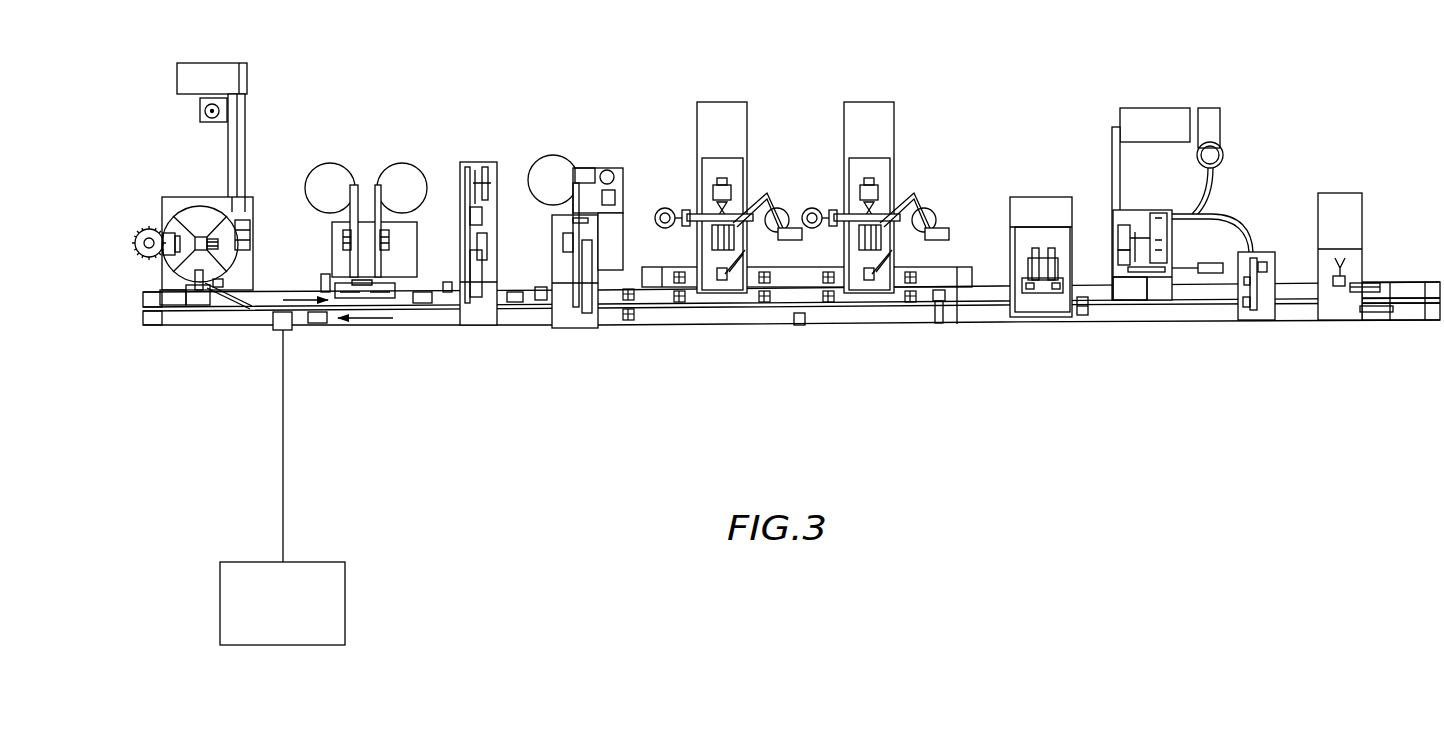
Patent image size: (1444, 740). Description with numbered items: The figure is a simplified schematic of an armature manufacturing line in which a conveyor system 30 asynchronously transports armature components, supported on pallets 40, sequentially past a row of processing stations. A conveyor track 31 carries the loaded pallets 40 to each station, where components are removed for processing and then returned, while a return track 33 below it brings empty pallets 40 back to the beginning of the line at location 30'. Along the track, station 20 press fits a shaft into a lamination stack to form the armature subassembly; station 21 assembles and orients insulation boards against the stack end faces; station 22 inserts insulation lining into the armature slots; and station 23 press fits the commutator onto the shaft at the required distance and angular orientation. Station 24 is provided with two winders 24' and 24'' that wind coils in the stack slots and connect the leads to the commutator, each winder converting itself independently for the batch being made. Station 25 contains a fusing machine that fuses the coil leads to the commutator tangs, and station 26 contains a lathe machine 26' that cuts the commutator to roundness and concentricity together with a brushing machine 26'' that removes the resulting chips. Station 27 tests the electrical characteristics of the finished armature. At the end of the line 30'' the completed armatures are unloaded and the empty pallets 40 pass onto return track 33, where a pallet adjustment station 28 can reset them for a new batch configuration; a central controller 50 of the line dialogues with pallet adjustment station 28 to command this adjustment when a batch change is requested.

The station 20 is at (208, 171).
The station 21 is at (360, 167).
The station 22 is at (481, 152).
The station 23 is at (584, 160).
The station 24 is at (795, 170).
The winder 24' is at (728, 168).
The winder 24'' is at (875, 168).
The station 25 is at (1041, 193).
The station 26 is at (1182, 178).
The lathe machine 26' is at (1129, 338).
The brushing machine 26'' is at (1256, 325).
The station 27 is at (1340, 186).
The pallet adjustment station 28 is at (272, 330).
The conveyor system 30 is at (791, 333).
The beginning of the line 30' is at (180, 357).
The end of the line 30'' is at (1401, 340).
The conveyor track 31 is at (282, 291).
The return track 33 is at (416, 319).
The pallets 40 is at (427, 291).
The central controller 50 is at (265, 562).